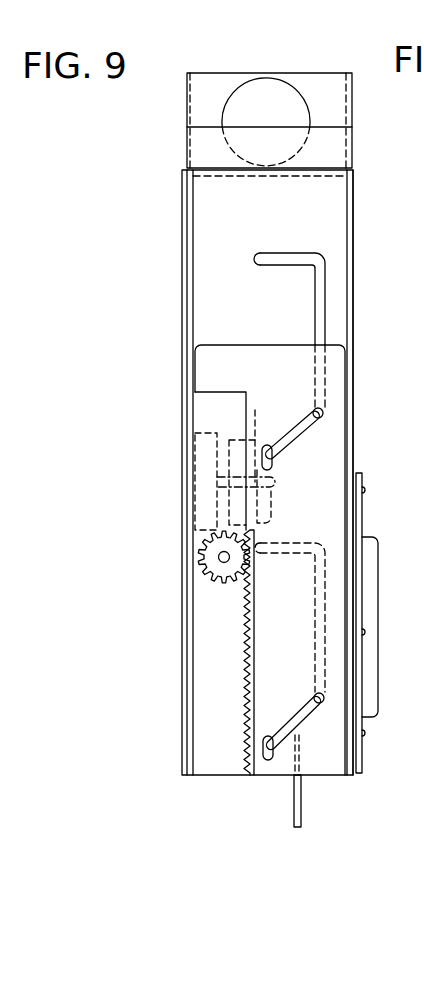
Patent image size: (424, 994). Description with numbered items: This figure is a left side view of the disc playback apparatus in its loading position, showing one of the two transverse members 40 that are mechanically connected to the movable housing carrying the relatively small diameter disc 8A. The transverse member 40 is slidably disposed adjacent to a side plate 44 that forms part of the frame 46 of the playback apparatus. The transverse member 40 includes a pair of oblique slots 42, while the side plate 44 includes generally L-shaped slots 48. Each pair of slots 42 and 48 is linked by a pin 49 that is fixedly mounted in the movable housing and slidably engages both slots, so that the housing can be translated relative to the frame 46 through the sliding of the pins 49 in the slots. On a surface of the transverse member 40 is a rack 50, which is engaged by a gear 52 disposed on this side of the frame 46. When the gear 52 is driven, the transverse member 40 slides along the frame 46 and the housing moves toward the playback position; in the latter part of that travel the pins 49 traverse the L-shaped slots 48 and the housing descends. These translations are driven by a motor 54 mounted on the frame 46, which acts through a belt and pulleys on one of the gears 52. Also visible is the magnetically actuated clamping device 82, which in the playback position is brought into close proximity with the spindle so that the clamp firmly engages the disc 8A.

The transverse member 40 is at (310, 537).
The oblique slot 42 is at (283, 438).
The side plate 44 is at (253, 234).
The frame 46 is at (354, 236).
The L-shaped slot 48 is at (270, 266).
The pin 49 is at (313, 410).
The rack 50 is at (245, 672).
The gear 52 is at (219, 583).
The motor 54 is at (224, 93).
The magnetically actuated clamping device 82 is at (380, 618).
The disc 8A is at (302, 804).